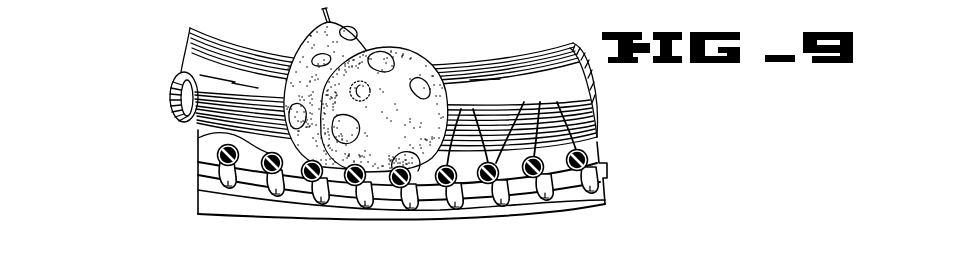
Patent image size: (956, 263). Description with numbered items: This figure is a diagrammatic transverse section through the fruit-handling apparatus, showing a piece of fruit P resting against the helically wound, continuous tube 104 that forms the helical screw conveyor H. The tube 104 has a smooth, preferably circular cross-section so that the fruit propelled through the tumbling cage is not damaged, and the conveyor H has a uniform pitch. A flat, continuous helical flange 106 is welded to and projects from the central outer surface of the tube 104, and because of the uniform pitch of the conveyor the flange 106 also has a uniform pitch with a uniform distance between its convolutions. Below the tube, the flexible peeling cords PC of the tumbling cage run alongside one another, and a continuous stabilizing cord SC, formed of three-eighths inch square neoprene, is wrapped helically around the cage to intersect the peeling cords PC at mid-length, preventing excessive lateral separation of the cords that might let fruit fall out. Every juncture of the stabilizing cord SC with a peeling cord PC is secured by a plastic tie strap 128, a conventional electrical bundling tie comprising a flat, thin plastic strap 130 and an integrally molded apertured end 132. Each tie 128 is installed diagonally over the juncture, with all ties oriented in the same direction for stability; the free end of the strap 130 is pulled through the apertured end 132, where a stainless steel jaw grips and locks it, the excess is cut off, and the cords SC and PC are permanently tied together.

The helical screw conveyor H is at (180, 50).
The helical tube 104 is at (192, 68).
The pear (produce) P is at (381, 49).
The peeling cords PC is at (216, 153).
The strap 130 is at (536, 122).
The helical flange 106 is at (594, 143).
The stabilizing cord SC is at (607, 166).
The tie strap 128 is at (212, 202).
The apertured end 132 is at (407, 207).